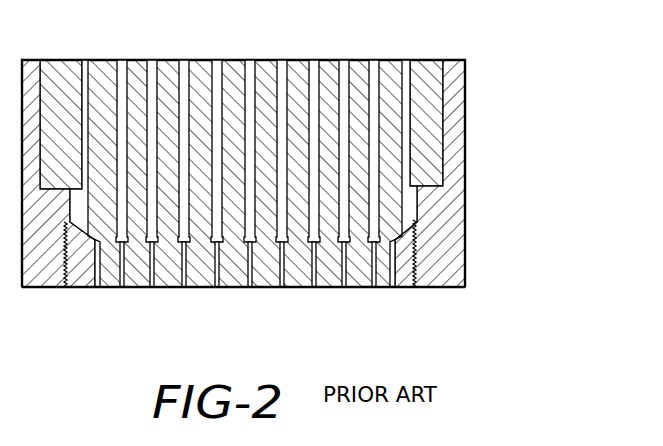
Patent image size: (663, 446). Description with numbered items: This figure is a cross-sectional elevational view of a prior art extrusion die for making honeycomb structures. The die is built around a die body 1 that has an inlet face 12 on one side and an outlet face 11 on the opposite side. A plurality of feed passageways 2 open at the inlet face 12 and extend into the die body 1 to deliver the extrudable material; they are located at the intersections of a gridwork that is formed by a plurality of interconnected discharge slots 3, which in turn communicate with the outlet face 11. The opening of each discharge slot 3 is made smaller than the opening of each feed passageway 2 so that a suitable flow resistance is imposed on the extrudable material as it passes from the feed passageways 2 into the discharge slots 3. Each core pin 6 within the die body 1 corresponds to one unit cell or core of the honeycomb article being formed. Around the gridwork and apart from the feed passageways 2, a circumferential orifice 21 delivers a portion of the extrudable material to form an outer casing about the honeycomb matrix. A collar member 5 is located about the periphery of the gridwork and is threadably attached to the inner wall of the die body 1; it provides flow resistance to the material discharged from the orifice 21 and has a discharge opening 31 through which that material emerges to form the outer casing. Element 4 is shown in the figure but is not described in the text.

The die body 1 is at (473, 218).
The feed passageways 2 is at (152, 62).
The inlet face 12 is at (208, 58).
The orifice 21 is at (85, 60).
The discharge slots 3 is at (318, 265).
The discharge opening 31 is at (98, 270).
The slot 4 is at (121, 246).
The collar member 5 is at (70, 287).
The core pin 6 is at (163, 288).
The outlet face 11 is at (199, 290).